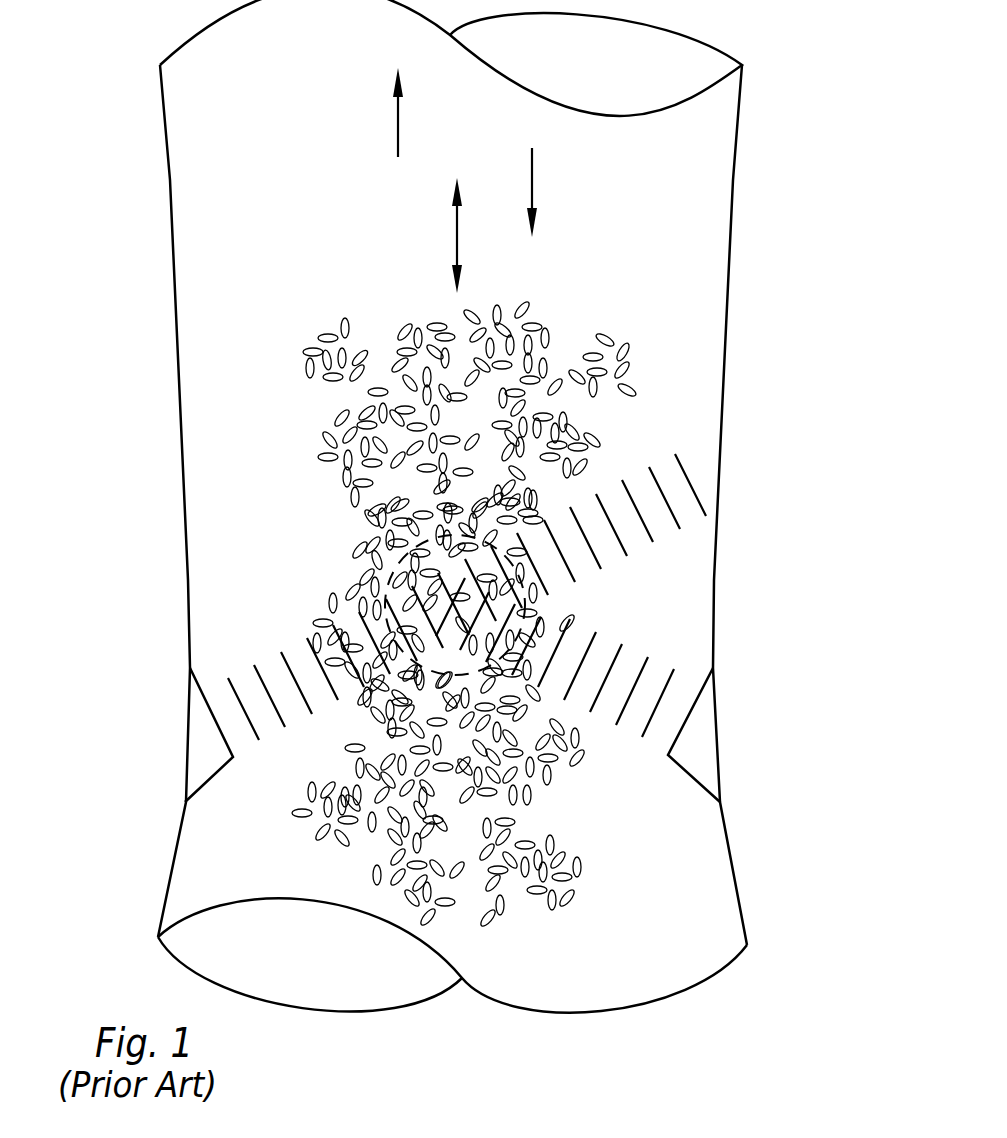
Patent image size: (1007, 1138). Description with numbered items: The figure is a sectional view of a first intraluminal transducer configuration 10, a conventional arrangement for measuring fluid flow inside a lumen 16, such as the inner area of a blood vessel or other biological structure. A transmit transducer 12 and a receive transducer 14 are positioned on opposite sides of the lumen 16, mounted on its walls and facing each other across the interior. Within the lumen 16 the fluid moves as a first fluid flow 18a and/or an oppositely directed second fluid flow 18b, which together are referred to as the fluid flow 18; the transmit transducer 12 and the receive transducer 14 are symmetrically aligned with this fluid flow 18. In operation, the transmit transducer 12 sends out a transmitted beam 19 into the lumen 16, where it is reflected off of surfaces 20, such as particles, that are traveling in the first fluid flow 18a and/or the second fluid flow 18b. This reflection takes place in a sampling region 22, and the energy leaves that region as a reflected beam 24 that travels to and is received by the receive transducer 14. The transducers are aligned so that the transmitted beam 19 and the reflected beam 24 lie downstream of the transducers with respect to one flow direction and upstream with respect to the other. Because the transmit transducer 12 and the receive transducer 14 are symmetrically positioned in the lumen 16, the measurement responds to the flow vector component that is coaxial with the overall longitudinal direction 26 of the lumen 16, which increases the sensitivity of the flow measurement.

The first intraluminal transducer configuration 10 is at (800, 160).
The transmit transducer 12 is at (198, 710).
The receive transducer 14 is at (705, 712).
The lumen 16 is at (722, 300).
The fluid flow 18 is at (278, 184).
The first fluid flow 18a is at (398, 130).
The second fluid flow 18b is at (534, 180).
The transmitted beam 19 is at (282, 667).
The surfaces 20 is at (335, 332).
The sampling region 22 is at (427, 548).
The reflected beam 24 is at (627, 665).
The overall longitudinal direction 26 is at (457, 232).